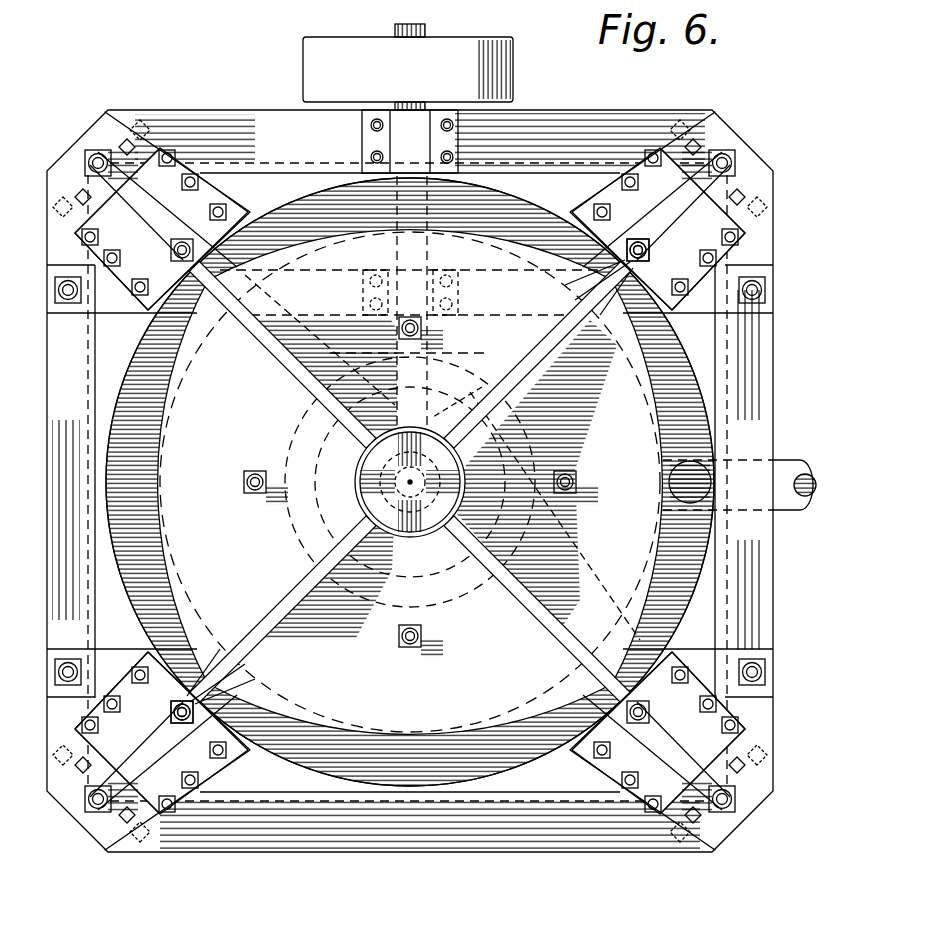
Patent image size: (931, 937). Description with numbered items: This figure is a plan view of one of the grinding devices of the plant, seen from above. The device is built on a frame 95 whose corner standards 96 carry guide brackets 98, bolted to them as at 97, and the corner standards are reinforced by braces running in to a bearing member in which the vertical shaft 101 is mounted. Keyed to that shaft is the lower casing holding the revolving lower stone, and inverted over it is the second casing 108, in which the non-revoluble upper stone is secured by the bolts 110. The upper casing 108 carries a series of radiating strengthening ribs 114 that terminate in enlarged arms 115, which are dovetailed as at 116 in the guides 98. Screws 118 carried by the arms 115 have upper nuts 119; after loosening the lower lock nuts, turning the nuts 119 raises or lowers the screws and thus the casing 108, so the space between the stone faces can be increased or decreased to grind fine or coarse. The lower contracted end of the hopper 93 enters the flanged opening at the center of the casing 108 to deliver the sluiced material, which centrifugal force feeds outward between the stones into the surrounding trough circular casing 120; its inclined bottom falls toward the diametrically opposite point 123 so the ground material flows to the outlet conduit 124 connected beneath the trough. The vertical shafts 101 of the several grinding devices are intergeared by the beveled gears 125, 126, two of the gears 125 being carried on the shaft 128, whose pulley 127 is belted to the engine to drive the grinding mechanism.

The hopper 93 is at (362, 500).
The frame 95 is at (443, 838).
The standard 96 is at (178, 150).
The bolt 97 is at (95, 240).
The guide bracket 98 is at (660, 240).
The vertical shaft 101 is at (488, 492).
The second casing 108 is at (410, 482).
The bolt 110 is at (422, 328).
The radiating strengthening rib 114 is at (282, 356).
The enlarged arm 115 is at (673, 312).
The dovetail 116 is at (670, 255).
The screw 118 is at (712, 305).
The upper nut 119 is at (578, 272).
The trough circular casing 120 is at (127, 390).
The diametrically opposite point 123 is at (690, 462).
The outlet conduit 124 is at (788, 511).
The beveled gear 125 is at (487, 360).
The beveled gear 126 is at (538, 438).
The pulley 127 is at (408, 67).
The shaft 128 is at (405, 106).